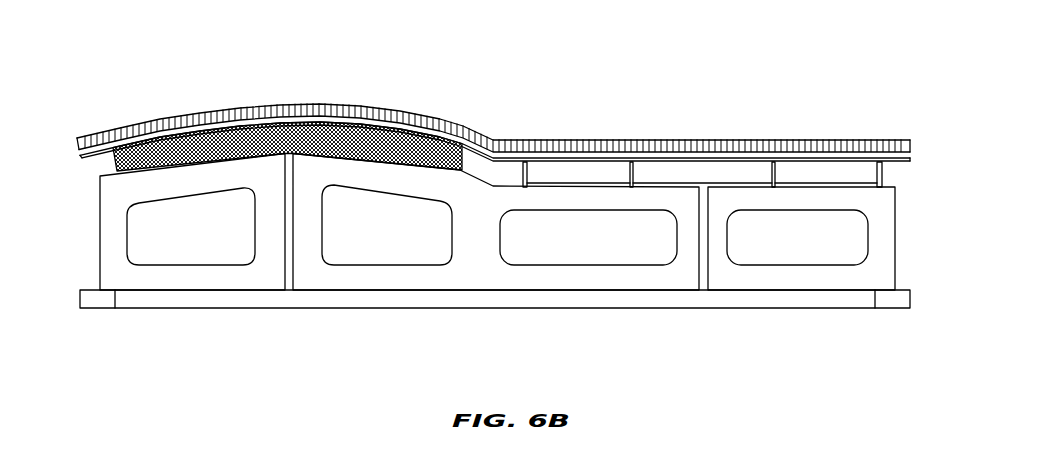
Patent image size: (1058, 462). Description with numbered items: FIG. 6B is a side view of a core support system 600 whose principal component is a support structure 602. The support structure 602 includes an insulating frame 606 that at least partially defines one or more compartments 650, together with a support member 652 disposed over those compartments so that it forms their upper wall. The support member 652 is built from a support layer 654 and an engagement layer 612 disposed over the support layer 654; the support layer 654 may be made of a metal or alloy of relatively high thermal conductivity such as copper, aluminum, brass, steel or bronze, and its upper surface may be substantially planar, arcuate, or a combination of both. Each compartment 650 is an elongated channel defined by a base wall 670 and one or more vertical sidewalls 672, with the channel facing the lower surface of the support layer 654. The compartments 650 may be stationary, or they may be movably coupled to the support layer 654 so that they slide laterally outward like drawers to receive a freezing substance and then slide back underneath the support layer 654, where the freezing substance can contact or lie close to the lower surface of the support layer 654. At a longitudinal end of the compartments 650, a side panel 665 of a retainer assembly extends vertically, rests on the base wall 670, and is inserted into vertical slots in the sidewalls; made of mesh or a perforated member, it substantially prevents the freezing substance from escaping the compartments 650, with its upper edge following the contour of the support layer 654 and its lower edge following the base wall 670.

The core support system 600 is at (501, 194).
The support structure 602 is at (909, 240).
The insulating frame 606 is at (895, 306).
The engagement layer 612 is at (80, 137).
The compartments 650 is at (702, 213).
The support member 652 is at (501, 151).
The support layer 654 is at (81, 162).
The side panel 665 is at (135, 124).
The base wall 670 is at (602, 182).
The vertical sidewalls 672 is at (633, 168).